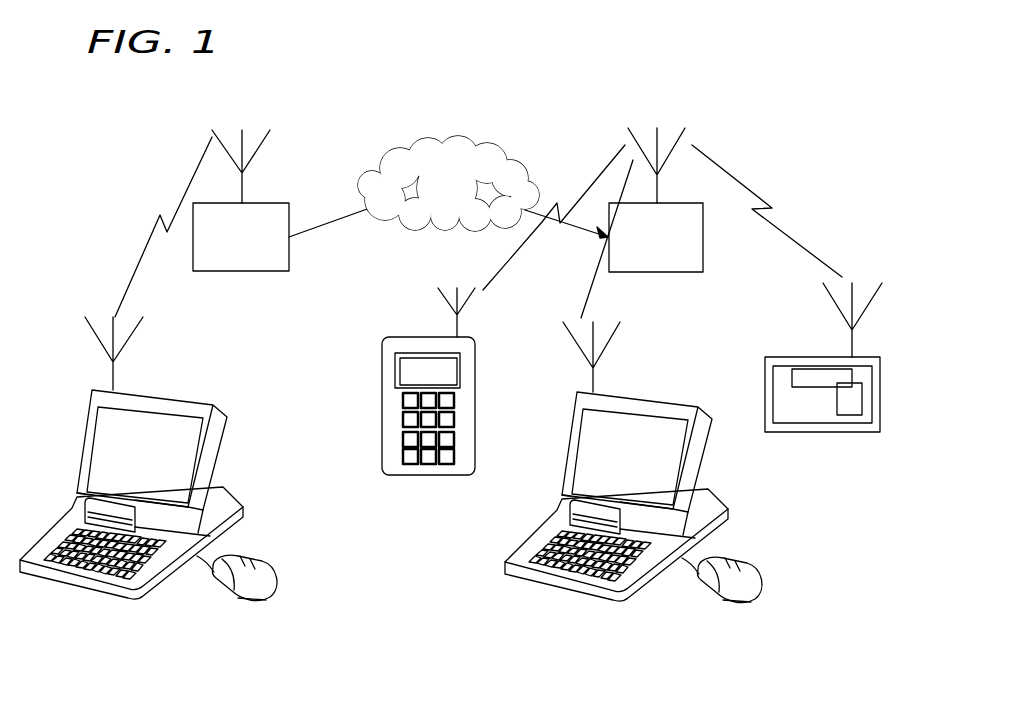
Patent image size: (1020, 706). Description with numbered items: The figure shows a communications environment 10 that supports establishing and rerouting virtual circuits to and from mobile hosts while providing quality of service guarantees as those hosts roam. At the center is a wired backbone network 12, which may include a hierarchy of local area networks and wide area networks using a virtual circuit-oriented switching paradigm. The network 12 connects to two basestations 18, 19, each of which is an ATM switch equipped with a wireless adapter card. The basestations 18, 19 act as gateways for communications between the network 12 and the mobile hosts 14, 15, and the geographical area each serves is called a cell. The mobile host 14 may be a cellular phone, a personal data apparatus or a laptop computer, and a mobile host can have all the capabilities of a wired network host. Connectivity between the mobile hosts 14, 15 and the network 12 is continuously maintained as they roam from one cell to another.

The communications environment 10 is at (326, 97).
The wired backbone network 12 is at (460, 150).
The mobile host 14 is at (632, 587).
The mobile host 15 is at (142, 577).
The basestation 18 is at (670, 272).
The basestation 19 is at (245, 271).